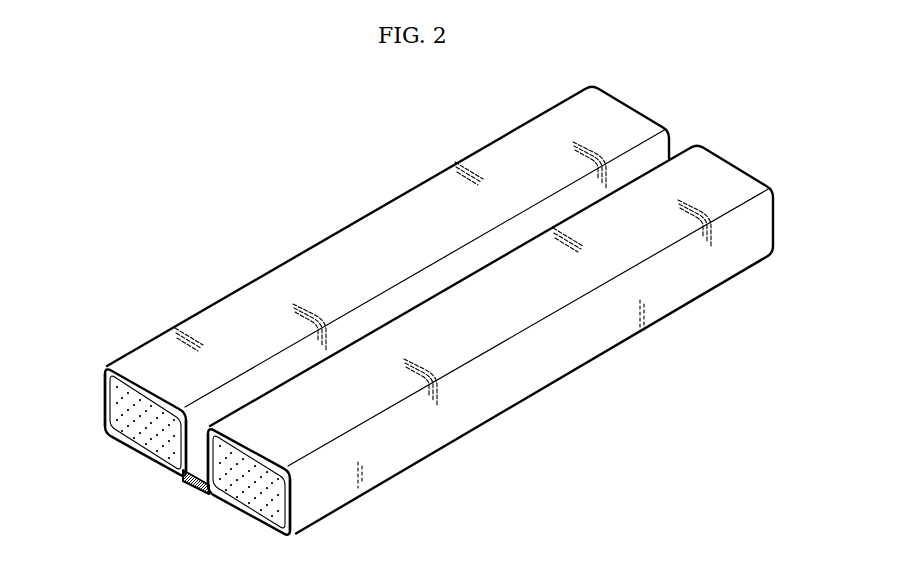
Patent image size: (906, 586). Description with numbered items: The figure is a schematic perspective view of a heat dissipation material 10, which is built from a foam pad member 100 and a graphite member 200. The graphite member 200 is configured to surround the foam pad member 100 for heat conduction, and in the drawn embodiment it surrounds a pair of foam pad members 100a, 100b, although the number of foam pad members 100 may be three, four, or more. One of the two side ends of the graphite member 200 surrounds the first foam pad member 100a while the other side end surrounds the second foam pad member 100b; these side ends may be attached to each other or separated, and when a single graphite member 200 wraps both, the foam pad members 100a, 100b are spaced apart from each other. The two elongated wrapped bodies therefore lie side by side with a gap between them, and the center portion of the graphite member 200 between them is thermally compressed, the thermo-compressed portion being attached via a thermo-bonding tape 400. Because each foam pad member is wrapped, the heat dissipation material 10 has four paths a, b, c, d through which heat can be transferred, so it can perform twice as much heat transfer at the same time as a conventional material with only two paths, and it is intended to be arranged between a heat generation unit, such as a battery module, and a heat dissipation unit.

The heat dissipation material 10 is at (211, 182).
The foam pad member 100 is at (174, 574).
The foam pad member 100a is at (143, 428).
The foam pad member 100b is at (252, 485).
The graphite member 200 is at (213, 323).
The thermo-bonding tape 400 is at (191, 488).
The path a is at (103, 398).
The path b is at (291, 502).
The path c is at (188, 445).
The path d is at (205, 442).